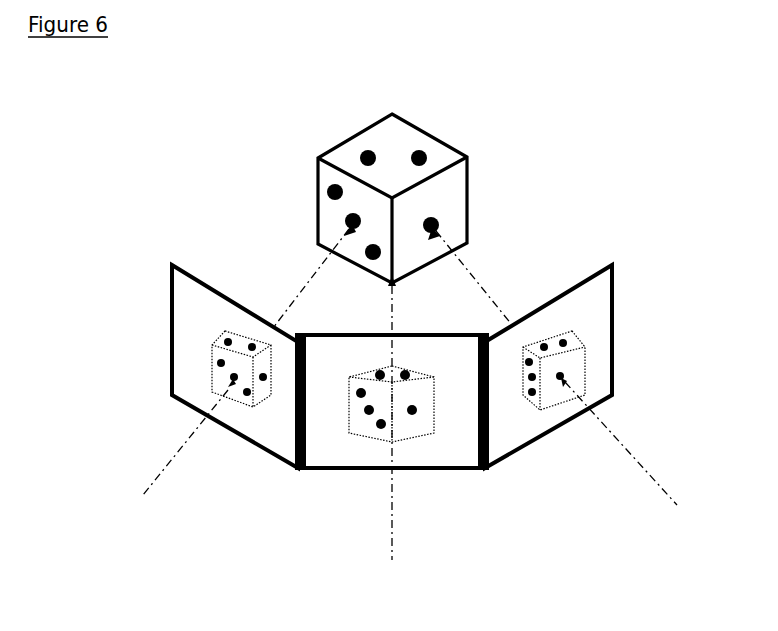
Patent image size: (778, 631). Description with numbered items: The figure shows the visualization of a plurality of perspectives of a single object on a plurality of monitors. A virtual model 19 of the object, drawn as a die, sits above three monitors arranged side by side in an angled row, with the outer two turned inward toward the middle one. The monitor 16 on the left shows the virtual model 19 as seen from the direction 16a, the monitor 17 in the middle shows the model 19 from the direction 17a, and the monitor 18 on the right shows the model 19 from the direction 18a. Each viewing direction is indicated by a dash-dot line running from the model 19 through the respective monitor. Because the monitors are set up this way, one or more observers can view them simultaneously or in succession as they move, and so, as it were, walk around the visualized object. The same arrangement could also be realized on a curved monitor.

The virtual model 19 is at (392, 199).
The monitor 16 is at (235, 360).
The monitor 17 is at (392, 394).
The monitor 18 is at (548, 364).
The direction 16a is at (234, 373).
The direction 17a is at (392, 433).
The direction 18a is at (564, 378).